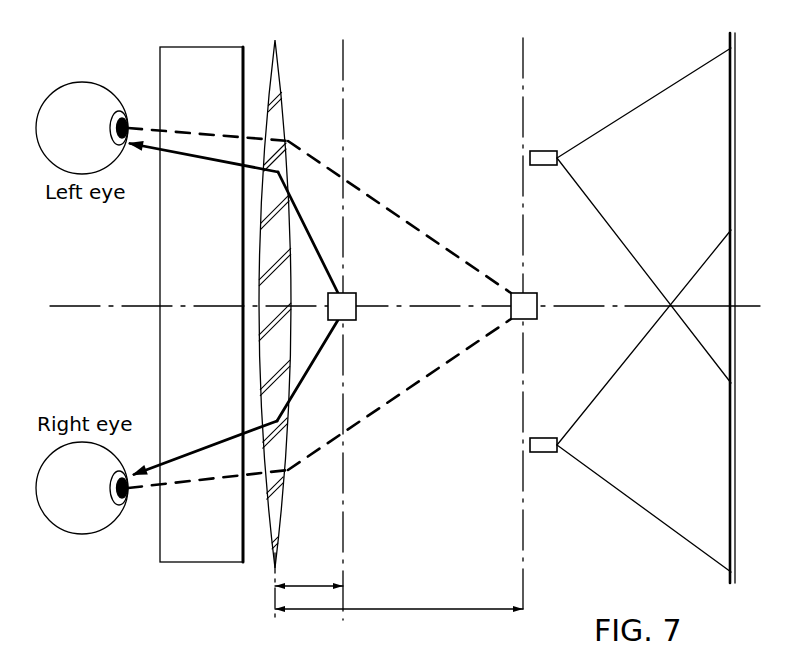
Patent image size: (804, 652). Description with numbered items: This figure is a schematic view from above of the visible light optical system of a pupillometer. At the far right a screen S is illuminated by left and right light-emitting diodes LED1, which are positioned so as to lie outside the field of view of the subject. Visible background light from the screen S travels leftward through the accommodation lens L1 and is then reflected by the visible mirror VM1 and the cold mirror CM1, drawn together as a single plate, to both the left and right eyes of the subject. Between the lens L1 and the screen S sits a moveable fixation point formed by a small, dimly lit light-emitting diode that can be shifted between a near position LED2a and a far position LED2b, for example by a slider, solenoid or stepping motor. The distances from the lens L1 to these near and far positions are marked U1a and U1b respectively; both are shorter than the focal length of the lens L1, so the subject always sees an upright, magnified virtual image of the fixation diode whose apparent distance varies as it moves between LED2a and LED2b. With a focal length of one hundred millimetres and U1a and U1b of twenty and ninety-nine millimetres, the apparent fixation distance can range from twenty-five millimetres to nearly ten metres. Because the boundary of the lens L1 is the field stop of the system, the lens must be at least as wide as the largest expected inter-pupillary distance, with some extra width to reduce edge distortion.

The accommodation lens L1 is at (275, 289).
The screen S is at (730, 294).
The light-emitting diode LED1 is at (630, 310).
The near fixation point position LED2a is at (380, 294).
The far fixation point position LED2b is at (557, 291).
The cold mirror CM1 is at (164, 333).
The visible mirror VM1 is at (205, 545).
The distance between lens and near fixation point position U1a is at (309, 573).
The distance between lens and far fixation point position U1b is at (399, 595).